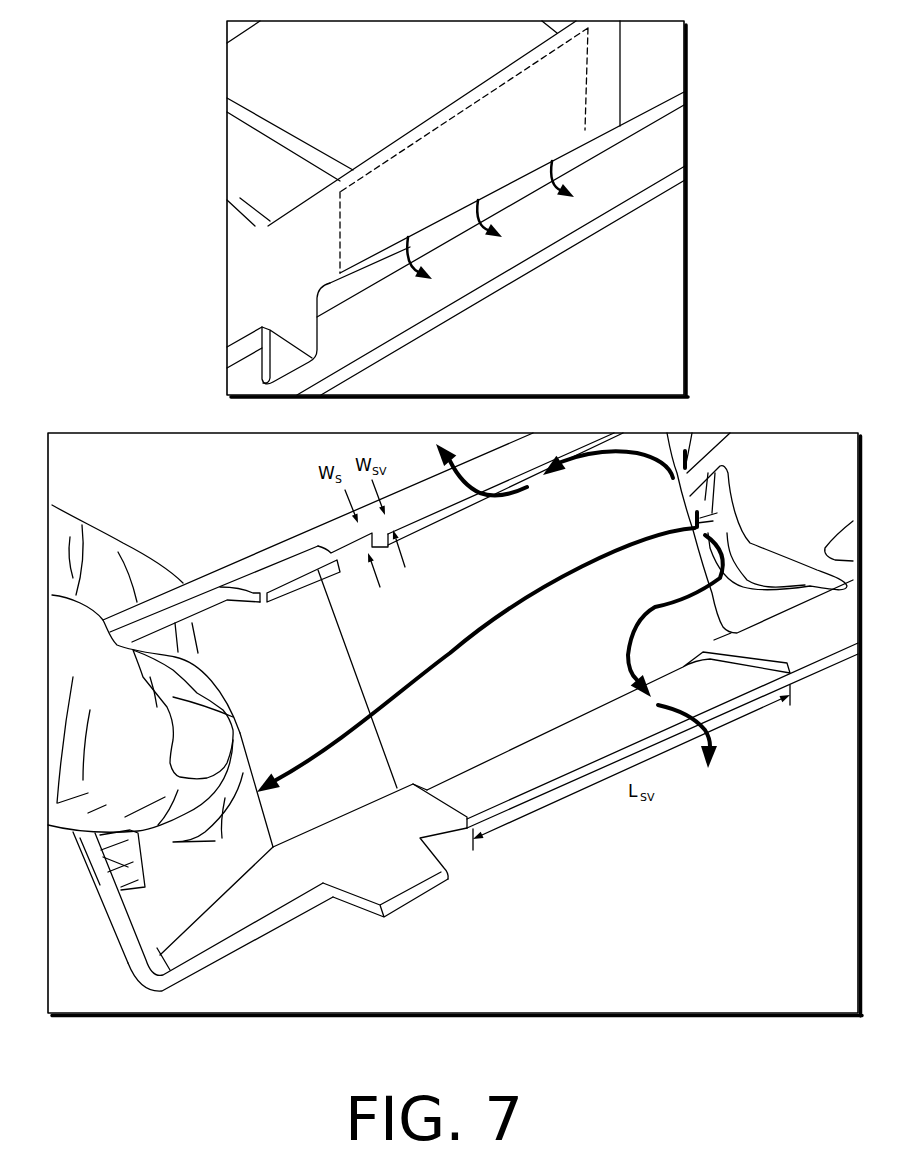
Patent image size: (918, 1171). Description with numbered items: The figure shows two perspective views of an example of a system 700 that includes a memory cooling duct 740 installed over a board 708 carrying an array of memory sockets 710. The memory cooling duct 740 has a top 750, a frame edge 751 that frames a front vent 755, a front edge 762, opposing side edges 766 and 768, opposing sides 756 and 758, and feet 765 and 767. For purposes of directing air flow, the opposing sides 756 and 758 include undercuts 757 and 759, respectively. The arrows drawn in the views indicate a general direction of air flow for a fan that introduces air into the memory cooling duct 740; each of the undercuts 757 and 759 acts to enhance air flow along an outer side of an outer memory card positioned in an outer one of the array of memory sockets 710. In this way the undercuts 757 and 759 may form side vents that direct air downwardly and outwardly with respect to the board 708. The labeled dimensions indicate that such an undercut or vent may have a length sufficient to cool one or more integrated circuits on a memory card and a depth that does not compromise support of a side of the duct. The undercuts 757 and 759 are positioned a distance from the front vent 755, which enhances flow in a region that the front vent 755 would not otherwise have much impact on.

The system 700 is at (657, 392).
The board 708 is at (672, 159).
The array of memory sockets 710 is at (570, 168).
The memory cooling duct 740 is at (383, 92).
The top 750 is at (348, 83).
The frame edge 751 is at (235, 228).
The front vent 755 is at (213, 879).
The opposing side 756 is at (293, 568).
The undercut 757 is at (425, 516).
The opposing side 758 is at (385, 842).
The undercut 759 is at (470, 773).
The front edge 762 is at (125, 927).
The foot 765 is at (297, 588).
The side edge 766 is at (333, 289).
The foot 767 is at (413, 897).
The side edge 768 is at (440, 842).